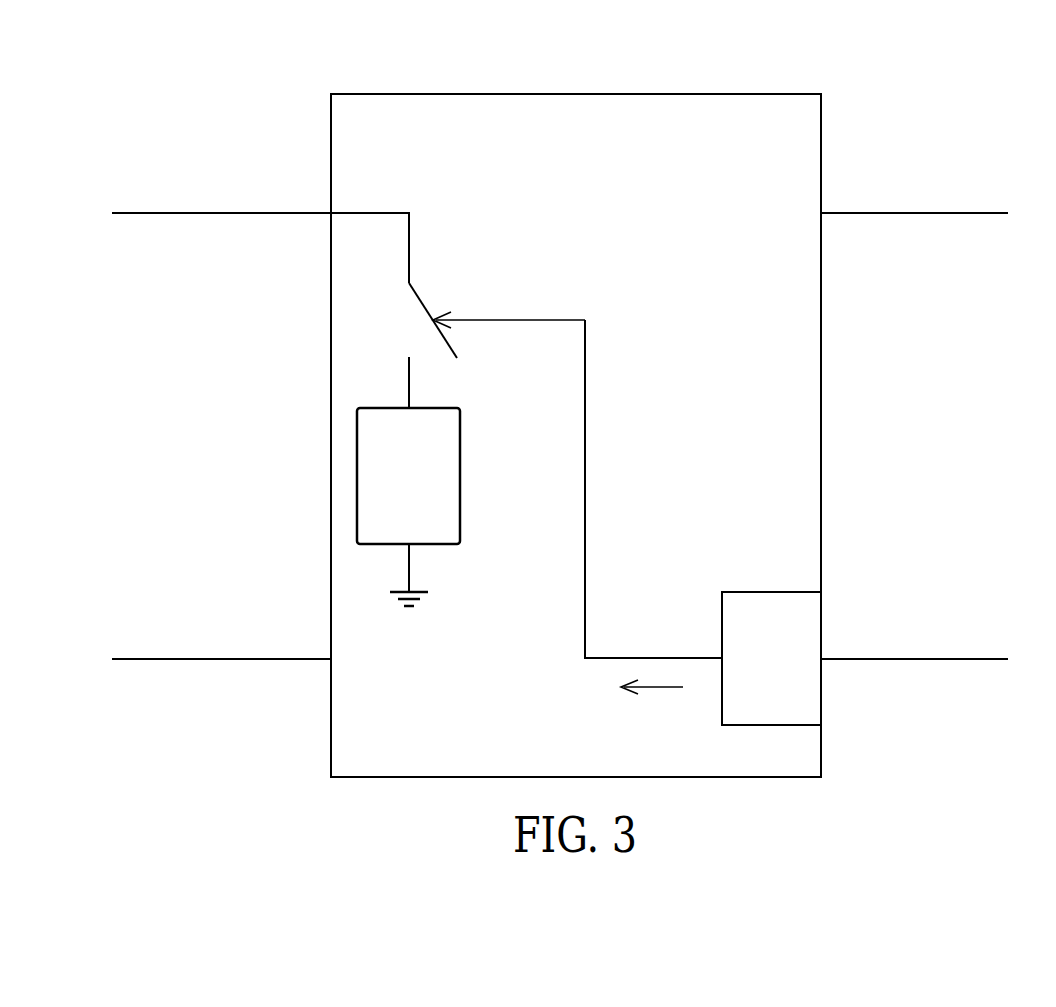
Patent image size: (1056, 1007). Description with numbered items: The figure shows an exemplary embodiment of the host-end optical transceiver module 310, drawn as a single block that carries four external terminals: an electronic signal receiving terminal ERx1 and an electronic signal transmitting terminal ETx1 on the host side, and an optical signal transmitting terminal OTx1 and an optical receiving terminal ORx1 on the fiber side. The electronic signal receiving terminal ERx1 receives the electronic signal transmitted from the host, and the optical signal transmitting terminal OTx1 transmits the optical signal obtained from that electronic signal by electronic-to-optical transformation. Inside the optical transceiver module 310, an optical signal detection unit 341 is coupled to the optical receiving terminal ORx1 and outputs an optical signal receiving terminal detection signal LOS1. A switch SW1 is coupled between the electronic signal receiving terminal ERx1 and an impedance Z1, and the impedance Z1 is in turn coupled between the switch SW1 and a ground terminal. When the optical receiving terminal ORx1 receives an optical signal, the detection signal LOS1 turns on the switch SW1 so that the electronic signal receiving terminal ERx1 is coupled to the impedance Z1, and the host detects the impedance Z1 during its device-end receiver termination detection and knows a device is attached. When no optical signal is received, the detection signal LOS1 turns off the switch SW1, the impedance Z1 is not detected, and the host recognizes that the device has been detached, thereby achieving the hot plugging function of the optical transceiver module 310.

The optical transceiver module 310 is at (576, 92).
The optical signal detection unit 341 is at (771, 590).
The switch SW1 is at (403, 330).
The impedance Z1 is at (408, 507).
The optical signal receiving terminal detection signal LOS1 is at (650, 690).
The electronic signal receiving terminal ERx1 is at (261, 211).
The electronic signal transmitting terminal ETx1 is at (261, 657).
The optical signal transmitting terminal OTx1 is at (889, 211).
The optical receiving terminal ORx1 is at (889, 657).